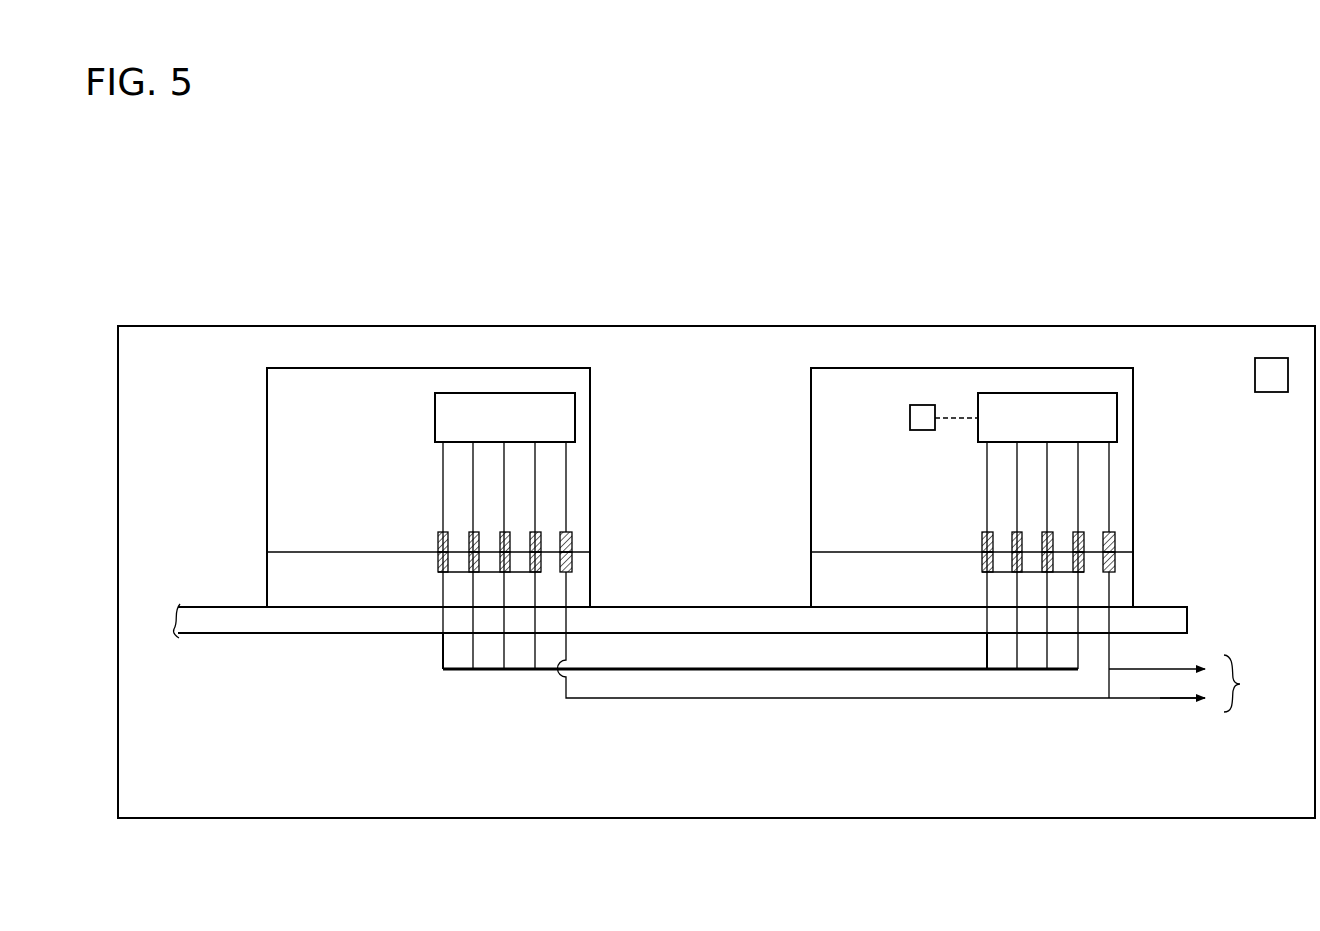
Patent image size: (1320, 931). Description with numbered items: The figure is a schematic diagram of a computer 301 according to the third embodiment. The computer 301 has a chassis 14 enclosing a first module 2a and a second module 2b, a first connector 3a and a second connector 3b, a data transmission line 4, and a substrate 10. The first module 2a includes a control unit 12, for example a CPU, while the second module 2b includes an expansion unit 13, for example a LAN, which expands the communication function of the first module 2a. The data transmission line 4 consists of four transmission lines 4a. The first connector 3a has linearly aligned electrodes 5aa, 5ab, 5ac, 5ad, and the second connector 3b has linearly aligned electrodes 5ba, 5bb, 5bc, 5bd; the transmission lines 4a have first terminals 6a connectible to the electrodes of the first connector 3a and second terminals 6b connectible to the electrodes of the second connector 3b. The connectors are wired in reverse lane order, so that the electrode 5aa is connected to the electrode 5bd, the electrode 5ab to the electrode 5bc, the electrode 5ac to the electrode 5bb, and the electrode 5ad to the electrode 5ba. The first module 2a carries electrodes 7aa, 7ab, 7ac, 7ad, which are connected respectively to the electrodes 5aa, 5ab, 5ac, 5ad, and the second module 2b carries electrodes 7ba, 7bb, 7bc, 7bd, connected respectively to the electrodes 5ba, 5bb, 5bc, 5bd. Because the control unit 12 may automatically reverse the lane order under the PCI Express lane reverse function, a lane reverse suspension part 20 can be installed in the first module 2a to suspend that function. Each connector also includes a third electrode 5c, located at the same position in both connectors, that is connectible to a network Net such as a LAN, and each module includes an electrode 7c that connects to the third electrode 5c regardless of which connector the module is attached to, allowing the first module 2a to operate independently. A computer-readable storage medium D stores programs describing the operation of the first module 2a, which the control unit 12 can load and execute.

The computer 301 is at (869, 222).
The chassis 14 is at (1238, 326).
The substrate 10 is at (718, 606).
The second module 2b is at (348, 406).
The second connector 3b is at (284, 576).
The expansion unit 13 is at (504, 394).
The electrode 7ba is at (443, 532).
The electrode 7bb is at (473, 532).
The electrode 7bc is at (505, 532).
The electrode 7bd is at (537, 532).
The electrode 5ba is at (441, 570).
The electrode 5bb is at (449, 574).
The electrode 5bc is at (489, 574).
The electrode 5bd is at (548, 574).
The second terminal 6b is at (443, 572).
The first module 2a is at (858, 406).
The first connector 3a is at (1122, 591).
The control unit 12 is at (1047, 394).
The lane reverse suspension part 20 is at (923, 405).
The electrode 7aa is at (985, 532).
The electrode 7ab is at (1017, 532).
The electrode 7ac is at (1050, 532).
The electrode 7ad is at (1080, 532).
The electrode 5aa is at (985, 570).
The electrode 5ab is at (994, 574).
The electrode 5ac is at (1039, 574).
The electrode 5ad is at (1080, 574).
The first terminal 6a is at (985, 572).
The electrode 7c is at (570, 541).
The third electrode 5c is at (570, 568).
The data transmission line 4 is at (718, 673).
The transmission line 4a is at (437, 653).
The network Net is at (1198, 683).
The computer-readable storage medium D is at (1272, 392).